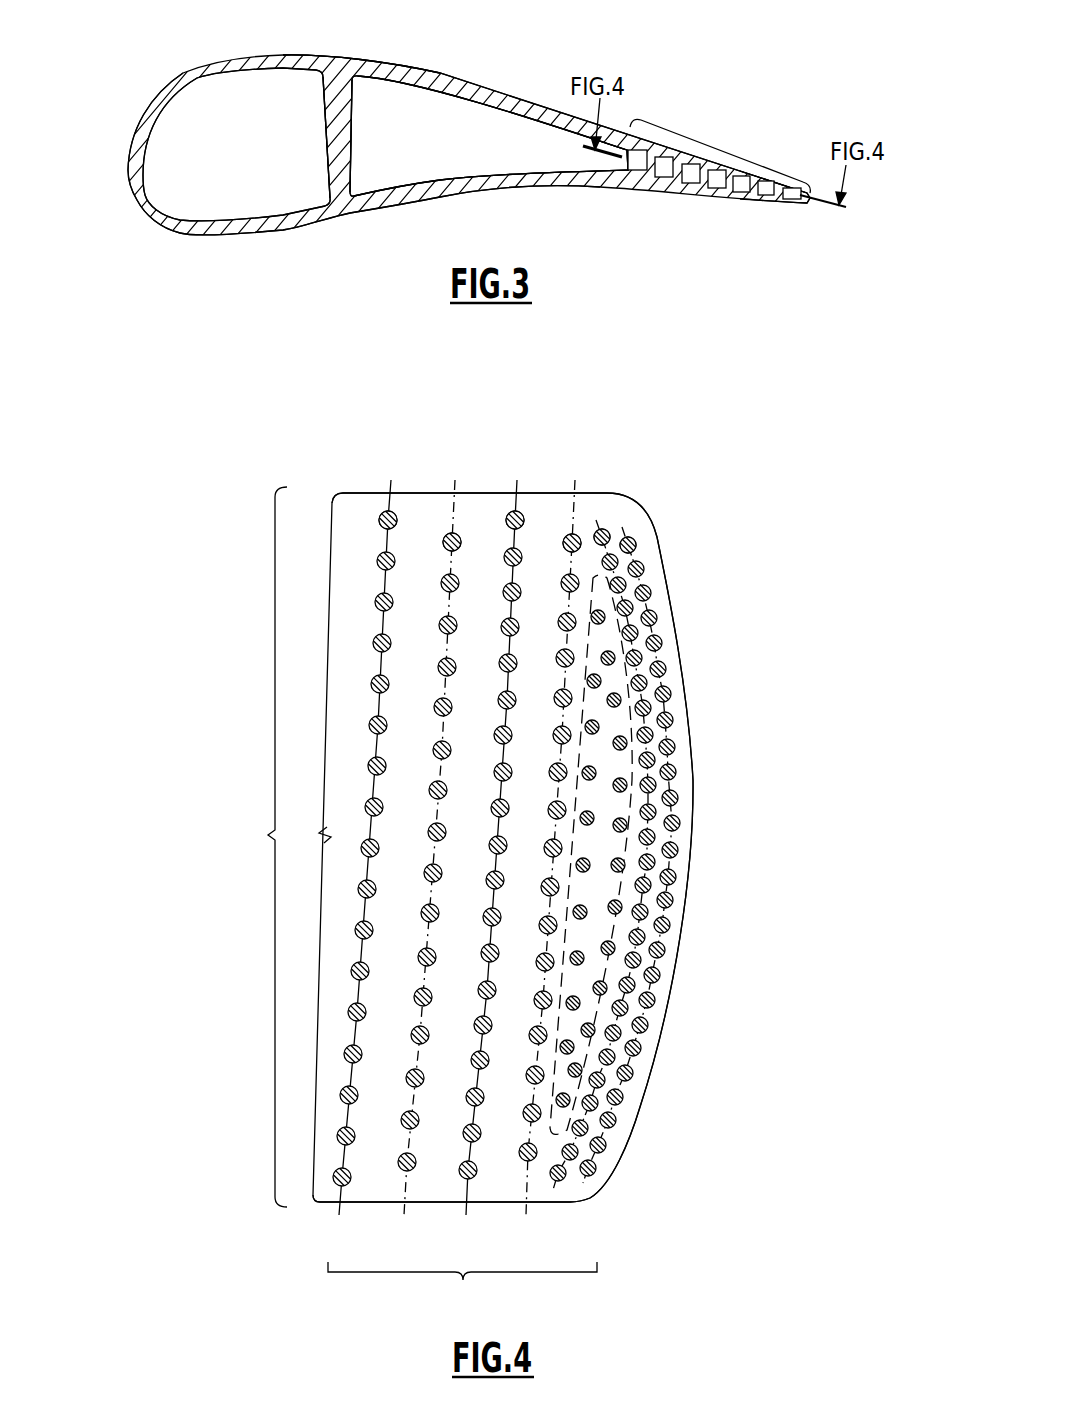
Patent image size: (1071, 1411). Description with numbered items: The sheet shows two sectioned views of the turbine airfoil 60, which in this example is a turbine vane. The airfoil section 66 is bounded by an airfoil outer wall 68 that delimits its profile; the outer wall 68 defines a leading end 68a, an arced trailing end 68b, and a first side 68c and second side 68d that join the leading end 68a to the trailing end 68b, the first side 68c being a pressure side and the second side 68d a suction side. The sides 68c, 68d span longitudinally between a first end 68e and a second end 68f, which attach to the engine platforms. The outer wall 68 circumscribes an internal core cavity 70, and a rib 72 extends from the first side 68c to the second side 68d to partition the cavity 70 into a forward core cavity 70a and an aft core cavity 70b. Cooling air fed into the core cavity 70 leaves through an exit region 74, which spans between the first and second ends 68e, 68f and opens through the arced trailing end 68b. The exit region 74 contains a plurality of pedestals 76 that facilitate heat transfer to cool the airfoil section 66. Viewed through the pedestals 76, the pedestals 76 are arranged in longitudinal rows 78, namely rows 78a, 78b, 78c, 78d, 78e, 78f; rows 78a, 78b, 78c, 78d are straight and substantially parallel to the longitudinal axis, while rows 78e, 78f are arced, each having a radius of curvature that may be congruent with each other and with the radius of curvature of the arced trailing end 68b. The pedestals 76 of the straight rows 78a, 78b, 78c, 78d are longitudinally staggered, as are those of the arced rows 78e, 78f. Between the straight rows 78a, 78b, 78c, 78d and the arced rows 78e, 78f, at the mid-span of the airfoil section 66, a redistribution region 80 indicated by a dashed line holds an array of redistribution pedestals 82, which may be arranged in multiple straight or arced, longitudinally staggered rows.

In FIG. 3, the turbine airfoil 60 is at (142, 267).
In FIG. 4, the airfoil section 66 is at (682, 568).
In FIG. 3, the airfoil outer wall 68 is at (278, 57).
In FIG. 3, the leading end 68a is at (126, 202).
In FIG. 3, the arced trailing end 68b is at (783, 203).
In FIG. 4, the arced trailing end 68b is at (680, 637).
In FIG. 3, the first side 68c is at (288, 228).
In FIG. 3, the second side 68d is at (353, 57).
In FIG. 4, the first end 68e is at (313, 1205).
In FIG. 4, the second end 68f is at (357, 507).
In FIG. 3, the internal core cavity 70 is at (503, 147).
In FIG. 3, the forward core cavity 70a is at (252, 170).
In FIG. 3, the aft core cavity 70b is at (439, 153).
In FIG. 3, the rib 72 is at (322, 142).
In FIG. 3, the exit region 74 is at (726, 140).
In FIG. 4, the exit region 74 is at (268, 835).
In FIG. 3, the pedestals 76 is at (757, 188).
In FIG. 4, the pedestals 76 is at (451, 534).
In FIG. 4, the rows 78 is at (463, 1282).
In FIG. 4, the first straight row 78a is at (342, 1190).
In FIG. 4, the second straight row 78b is at (407, 1183).
In FIG. 4, the third straight row 78c is at (470, 1188).
In FIG. 4, the fourth straight row 78d is at (530, 1187).
In FIG. 4, the first arced row 78e is at (557, 1187).
In FIG. 4, the second arced row 78f is at (578, 1183).
In FIG. 4, the redistribution region 80 is at (632, 779).
In FIG. 4, the redistribution pedestals 82 is at (626, 743).